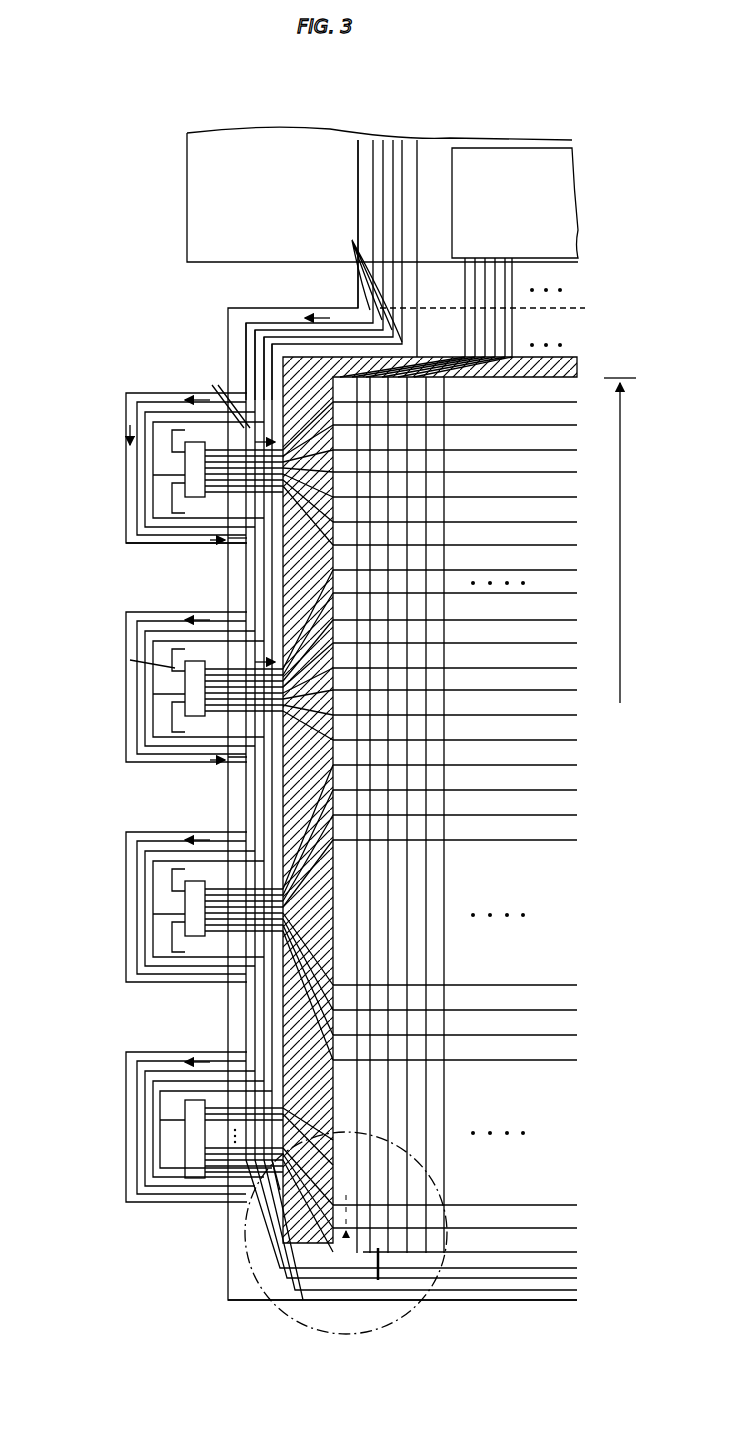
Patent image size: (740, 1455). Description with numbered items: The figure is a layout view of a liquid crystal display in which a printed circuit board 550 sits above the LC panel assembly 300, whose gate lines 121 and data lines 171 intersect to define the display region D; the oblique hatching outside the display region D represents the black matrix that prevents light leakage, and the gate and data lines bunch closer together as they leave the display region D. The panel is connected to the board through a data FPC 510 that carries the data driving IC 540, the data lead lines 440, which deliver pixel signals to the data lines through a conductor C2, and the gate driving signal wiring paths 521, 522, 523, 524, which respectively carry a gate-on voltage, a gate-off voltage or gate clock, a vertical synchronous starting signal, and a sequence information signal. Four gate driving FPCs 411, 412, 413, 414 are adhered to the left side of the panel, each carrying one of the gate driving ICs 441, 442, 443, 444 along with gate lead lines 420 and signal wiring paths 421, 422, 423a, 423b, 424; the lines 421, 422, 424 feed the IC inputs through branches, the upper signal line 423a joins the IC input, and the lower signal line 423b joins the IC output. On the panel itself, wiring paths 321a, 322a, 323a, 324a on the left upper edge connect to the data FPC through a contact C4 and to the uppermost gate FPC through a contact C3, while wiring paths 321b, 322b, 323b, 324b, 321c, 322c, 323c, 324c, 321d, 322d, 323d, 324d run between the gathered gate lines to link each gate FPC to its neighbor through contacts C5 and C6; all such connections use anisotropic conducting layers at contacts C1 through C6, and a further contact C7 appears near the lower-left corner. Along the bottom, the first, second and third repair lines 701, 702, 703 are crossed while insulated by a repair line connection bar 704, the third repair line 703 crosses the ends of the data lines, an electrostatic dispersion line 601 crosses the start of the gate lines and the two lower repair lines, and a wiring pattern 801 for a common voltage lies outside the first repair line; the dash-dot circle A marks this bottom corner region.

The gate line 121 is at (552, 1228).
The data line 171 is at (446, 1177).
The LC panel assembly 300 is at (220, 318).
The gate driving signal wiring path 321a is at (264, 337).
The gate driving signal wiring path 322a is at (257, 330).
The gate driving signal wiring path 323a is at (272, 344).
The gate driving signal wiring path 324a is at (228, 332).
The gate driving signal wiring path 321b is at (170, 632).
The gate driving signal wiring path 322b is at (165, 622).
The gate driving signal wiring path 323b is at (175, 642).
The gate driving signal wiring path 324b is at (126, 630).
The gate driving signal wiring path 321c is at (170, 852).
The gate driving signal wiring path 322c is at (165, 842).
The gate driving signal wiring path 323c is at (175, 862).
The gate driving signal wiring path 324c is at (126, 860).
The gate driving signal wiring path 321d is at (170, 1072).
The gate driving signal wiring path 322d is at (165, 1062).
The gate driving signal wiring path 323d is at (175, 1082).
The gate driving signal wiring path 324d is at (172, 1055).
The gate driving FPC 411 is at (153, 518).
The gate driving FPC 412 is at (172, 695).
The gate driving FPC 413 is at (172, 914).
The gate driving FPC 414 is at (160, 1104).
The gate lead line 420 is at (230, 540).
The gate driving signal wiring path 421 is at (137, 402).
The gate driving signal wiring path 422 is at (145, 470).
The upper signal line 423a is at (172, 438).
The lower signal line 423b is at (172, 498).
The gate driving signal wiring path 424 is at (126, 395).
The data lead line 440 is at (512, 272).
The gate driving IC 441 is at (185, 452).
The gate driving IC 442 is at (185, 710).
The gate driving IC 443 is at (185, 930).
The gate driving IC 444 is at (185, 1130).
The data FPC 510 is at (358, 160).
The gate driving signal wiring path 521 is at (393, 140).
The gate driving signal wiring path 522 is at (383, 160).
The gate driving signal wiring path 523 is at (417, 185).
The gate driving signal wiring path 524 is at (373, 178).
The data driving IC 540 is at (452, 148).
The printed circuit board 550 is at (187, 162).
The electrostatic dispersion line 601 is at (246, 1180).
The first repair line 701 is at (260, 1200).
The second repair line 702 is at (270, 1240).
The third repair line 703 is at (530, 1252).
The repair line connection bar 704 is at (385, 1280).
The wiring pattern 801 is at (228, 1300).
The contact C1 is at (130, 420).
The conductor C2 is at (503, 293).
The contact C3 is at (222, 392).
The contact C4 is at (364, 276).
The contact C5 is at (228, 540).
The contact C6 is at (130, 664).
The contact hole C7 is at (235, 1180).
The enlarged portion A is at (268, 1315).
The display region D is at (620, 554).